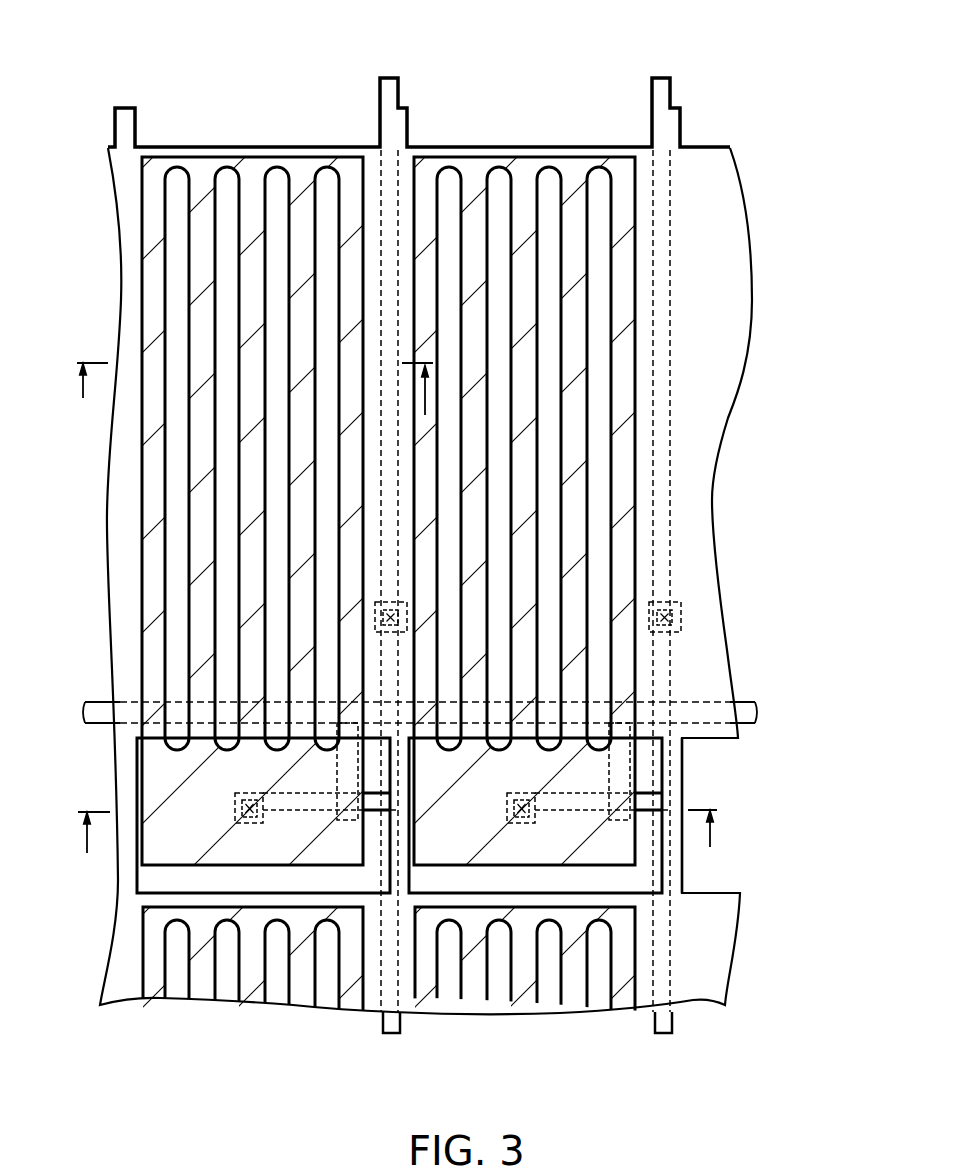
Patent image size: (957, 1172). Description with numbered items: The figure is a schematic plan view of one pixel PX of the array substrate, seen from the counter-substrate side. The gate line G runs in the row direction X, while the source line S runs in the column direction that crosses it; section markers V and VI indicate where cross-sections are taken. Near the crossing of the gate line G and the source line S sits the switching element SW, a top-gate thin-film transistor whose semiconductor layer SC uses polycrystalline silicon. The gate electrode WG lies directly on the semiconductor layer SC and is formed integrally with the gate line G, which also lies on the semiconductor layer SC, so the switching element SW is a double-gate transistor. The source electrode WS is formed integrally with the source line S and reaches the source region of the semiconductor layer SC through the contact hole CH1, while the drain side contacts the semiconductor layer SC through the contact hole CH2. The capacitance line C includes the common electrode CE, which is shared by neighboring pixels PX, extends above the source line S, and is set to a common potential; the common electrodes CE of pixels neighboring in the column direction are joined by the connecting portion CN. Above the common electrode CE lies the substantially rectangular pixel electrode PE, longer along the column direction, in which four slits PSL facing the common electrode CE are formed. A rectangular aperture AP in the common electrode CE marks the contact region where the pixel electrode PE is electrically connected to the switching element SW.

The row direction X is at (92, 75).
The pixel PX is at (262, 140).
The source line S is at (388, 78).
The gate line G is at (757, 713).
The connecting portion CN is at (677, 127).
The pixel electrode PE is at (142, 255).
The common electrode CE is at (112, 417).
The slit PSL is at (213, 522).
The capacitance line C is at (98, 610).
The source electrode WS is at (378, 601).
The contact hole CH1 is at (407, 612).
The contact hole CH2 is at (237, 812).
The semiconductor layer SC is at (287, 812).
The gate electrode WG is at (345, 818).
The switching element SW is at (369, 842).
The aperture AP is at (203, 893).
The section line V- V is at (398, 834).
The section line VI- VI is at (80, 378).